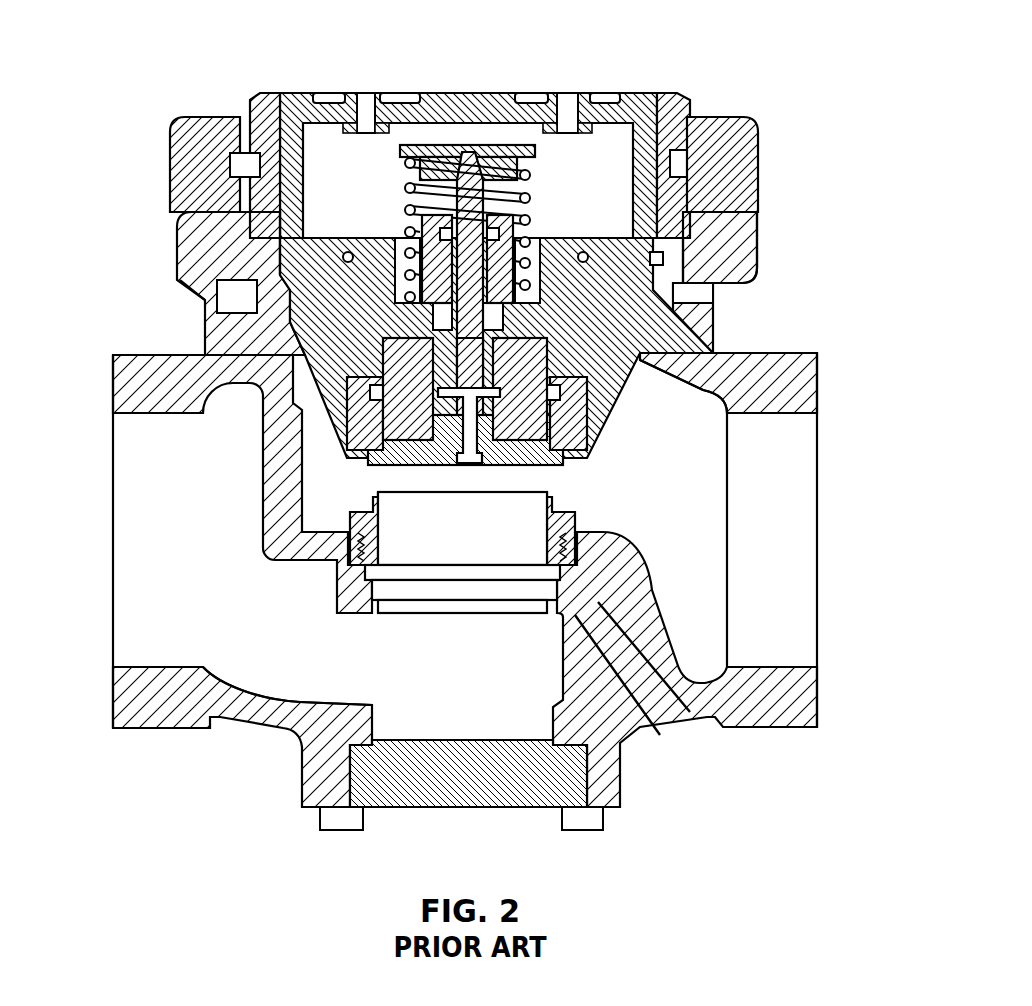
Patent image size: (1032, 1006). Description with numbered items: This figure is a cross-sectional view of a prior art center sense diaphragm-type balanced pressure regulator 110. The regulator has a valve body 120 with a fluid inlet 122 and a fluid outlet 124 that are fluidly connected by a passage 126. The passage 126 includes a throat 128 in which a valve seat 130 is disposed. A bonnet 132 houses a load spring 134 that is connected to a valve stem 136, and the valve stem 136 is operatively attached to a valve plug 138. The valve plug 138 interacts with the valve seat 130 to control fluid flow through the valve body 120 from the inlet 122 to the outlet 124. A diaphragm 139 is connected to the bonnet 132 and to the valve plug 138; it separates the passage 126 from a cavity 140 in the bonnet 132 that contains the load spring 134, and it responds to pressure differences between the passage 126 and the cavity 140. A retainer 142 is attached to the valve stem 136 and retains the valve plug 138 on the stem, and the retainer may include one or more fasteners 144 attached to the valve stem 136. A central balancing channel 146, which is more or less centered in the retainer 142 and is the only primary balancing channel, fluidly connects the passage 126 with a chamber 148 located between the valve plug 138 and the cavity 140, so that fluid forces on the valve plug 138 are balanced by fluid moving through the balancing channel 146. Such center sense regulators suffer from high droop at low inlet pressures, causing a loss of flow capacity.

The pressure regulator 110 is at (782, 40).
The valve body 120 is at (657, 718).
The fluid inlet 122 is at (130, 587).
The fluid outlet 124 is at (787, 560).
The passage 126 is at (663, 522).
The throat 128 is at (453, 637).
The valve seat 130 is at (367, 504).
The bonnet 132 is at (710, 247).
The load spring 134 is at (540, 221).
The valve stem 136 is at (528, 210).
The valve plug 138 is at (683, 337).
The diaphragm 139 is at (370, 390).
The cavity 140 is at (367, 163).
The retainer 142 is at (522, 464).
The fastener 144 is at (468, 462).
The balancing channel 146 is at (587, 438).
The chamber 148 is at (407, 300).